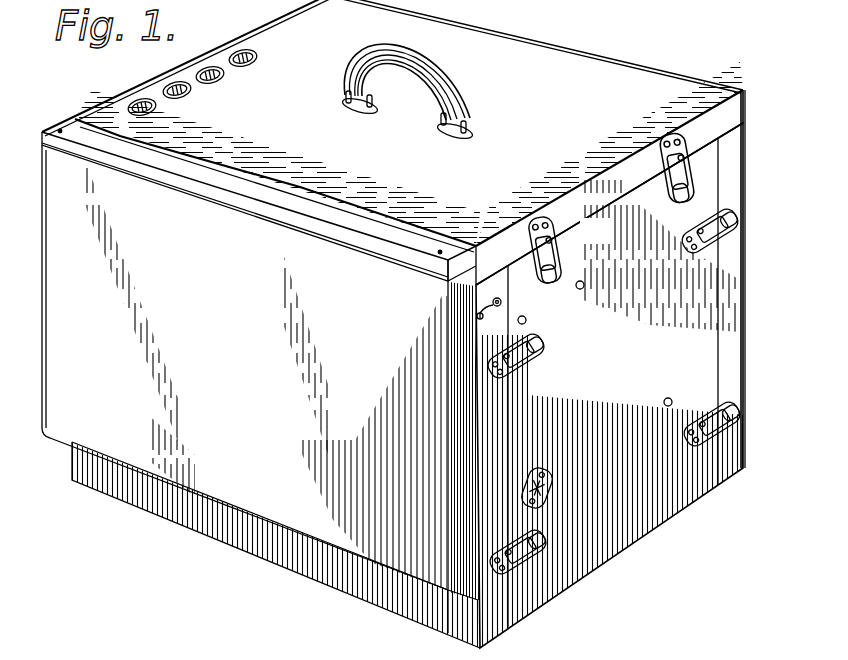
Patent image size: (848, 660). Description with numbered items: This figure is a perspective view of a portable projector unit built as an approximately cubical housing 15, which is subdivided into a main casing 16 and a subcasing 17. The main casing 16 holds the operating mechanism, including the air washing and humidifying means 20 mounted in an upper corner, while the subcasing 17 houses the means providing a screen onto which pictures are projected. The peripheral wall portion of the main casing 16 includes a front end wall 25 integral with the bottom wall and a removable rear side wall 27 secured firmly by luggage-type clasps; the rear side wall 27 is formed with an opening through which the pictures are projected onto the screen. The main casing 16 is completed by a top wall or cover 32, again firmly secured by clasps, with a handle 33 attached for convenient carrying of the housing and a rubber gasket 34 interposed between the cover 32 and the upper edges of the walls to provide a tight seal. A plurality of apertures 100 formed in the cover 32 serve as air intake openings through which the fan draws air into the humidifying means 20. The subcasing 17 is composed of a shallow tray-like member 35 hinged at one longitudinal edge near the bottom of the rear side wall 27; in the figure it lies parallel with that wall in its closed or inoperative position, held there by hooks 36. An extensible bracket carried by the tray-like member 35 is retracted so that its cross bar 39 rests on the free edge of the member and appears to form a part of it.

The housing 15 is at (393, 330).
The main casing 16 is at (642, 556).
The subcasing 17 is at (176, 455).
The air washing and humidifying means 20 is at (613, 403).
The front end wall 25 is at (574, 656).
The rear side wall 27 is at (447, 620).
The top wall or cover 32 is at (538, 121).
The handle 33 is at (441, 83).
The rubber gasket 34 is at (612, 203).
The tray-like member 35 is at (285, 384).
The hooks 36 is at (492, 306).
The cross bar 39 is at (338, 224).
The apertures 100 is at (247, 65).